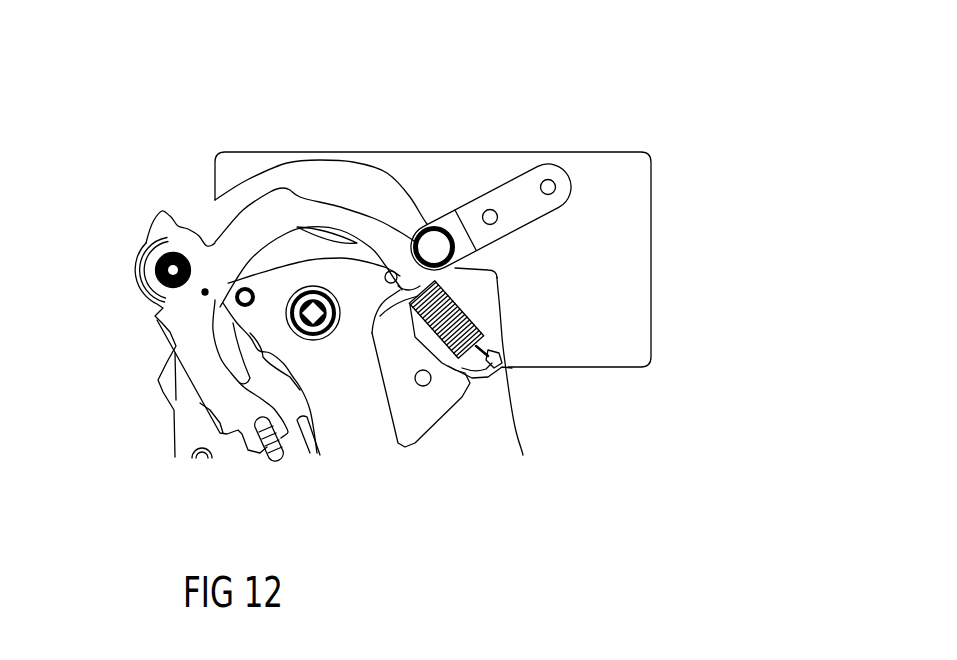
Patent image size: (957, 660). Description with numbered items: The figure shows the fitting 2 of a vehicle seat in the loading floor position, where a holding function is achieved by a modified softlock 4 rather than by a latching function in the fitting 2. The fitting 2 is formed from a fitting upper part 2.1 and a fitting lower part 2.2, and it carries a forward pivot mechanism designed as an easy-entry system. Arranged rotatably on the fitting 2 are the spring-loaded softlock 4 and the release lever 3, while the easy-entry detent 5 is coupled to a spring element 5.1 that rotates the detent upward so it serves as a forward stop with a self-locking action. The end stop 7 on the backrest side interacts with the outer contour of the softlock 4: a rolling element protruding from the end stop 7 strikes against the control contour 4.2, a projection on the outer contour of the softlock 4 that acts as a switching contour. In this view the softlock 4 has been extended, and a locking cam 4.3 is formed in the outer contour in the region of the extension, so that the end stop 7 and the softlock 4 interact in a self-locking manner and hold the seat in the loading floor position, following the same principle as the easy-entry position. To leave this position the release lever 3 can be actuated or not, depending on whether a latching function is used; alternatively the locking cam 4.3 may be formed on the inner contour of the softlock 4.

The fitting 2 is at (681, 86).
The fitting upper part 2.1 is at (620, 173).
The fitting lower part 2.2 is at (497, 425).
The release lever 3 is at (357, 433).
The softlock 4 is at (182, 328).
The control contour 4.2 is at (285, 190).
The locking cam 4.3 is at (405, 233).
The easy-entry detent 5 is at (277, 248).
The spring element 5.1 is at (133, 265).
The end stop 7 is at (537, 165).